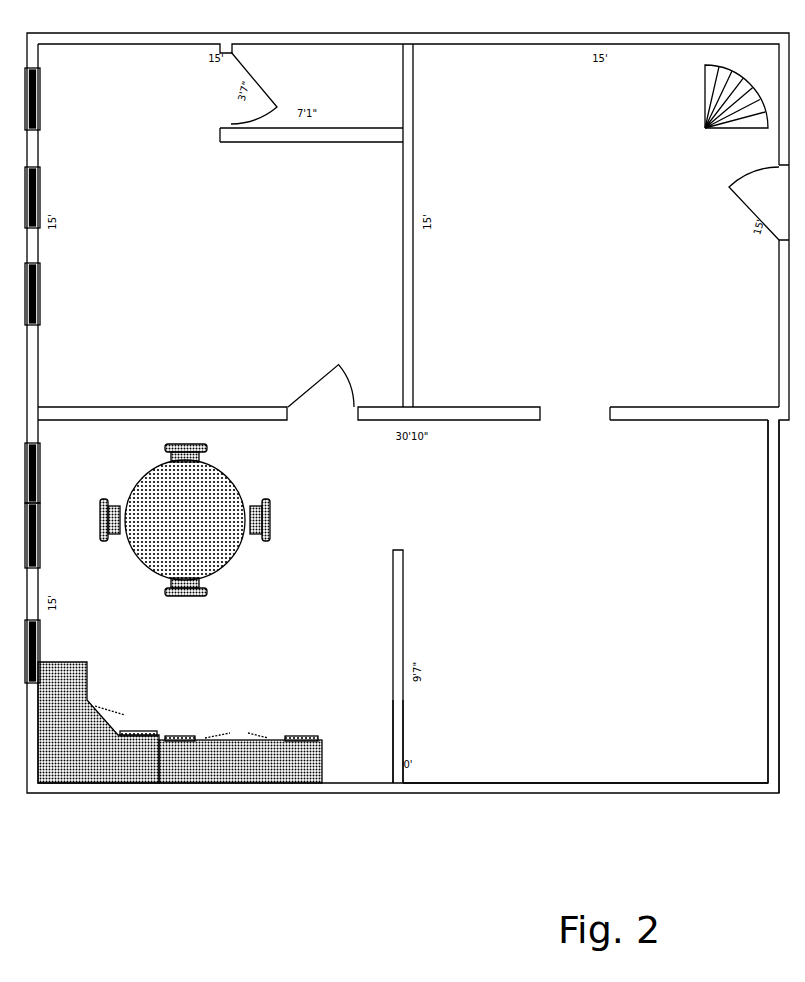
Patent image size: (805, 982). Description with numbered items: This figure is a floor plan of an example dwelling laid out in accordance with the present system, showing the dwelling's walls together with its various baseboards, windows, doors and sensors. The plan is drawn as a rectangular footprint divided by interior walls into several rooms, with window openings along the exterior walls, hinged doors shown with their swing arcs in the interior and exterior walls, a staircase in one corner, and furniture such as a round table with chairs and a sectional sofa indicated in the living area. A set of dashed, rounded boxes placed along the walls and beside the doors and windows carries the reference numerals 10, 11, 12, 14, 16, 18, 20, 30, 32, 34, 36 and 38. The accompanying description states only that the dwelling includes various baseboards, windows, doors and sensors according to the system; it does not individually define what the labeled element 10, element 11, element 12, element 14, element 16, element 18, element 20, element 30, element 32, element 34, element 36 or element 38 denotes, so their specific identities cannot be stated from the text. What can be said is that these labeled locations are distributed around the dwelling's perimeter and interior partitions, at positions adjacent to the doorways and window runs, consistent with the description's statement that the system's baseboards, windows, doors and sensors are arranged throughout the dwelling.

The interior wall 10 is at (127, 403).
The closet wall 11 is at (376, 96).
The window wall 12 is at (48, 533).
The half wall 14 is at (386, 620).
The bottom wall 16 is at (662, 787).
The right wall lower section 18 is at (750, 611).
The right wall upper section 20 is at (749, 331).
The closet door 30 is at (315, 70).
The dividing wall 32 is at (381, 294).
The interior door 34 is at (247, 443).
The half wall end 36 is at (371, 703).
The interior wall segment 38 is at (416, 352).